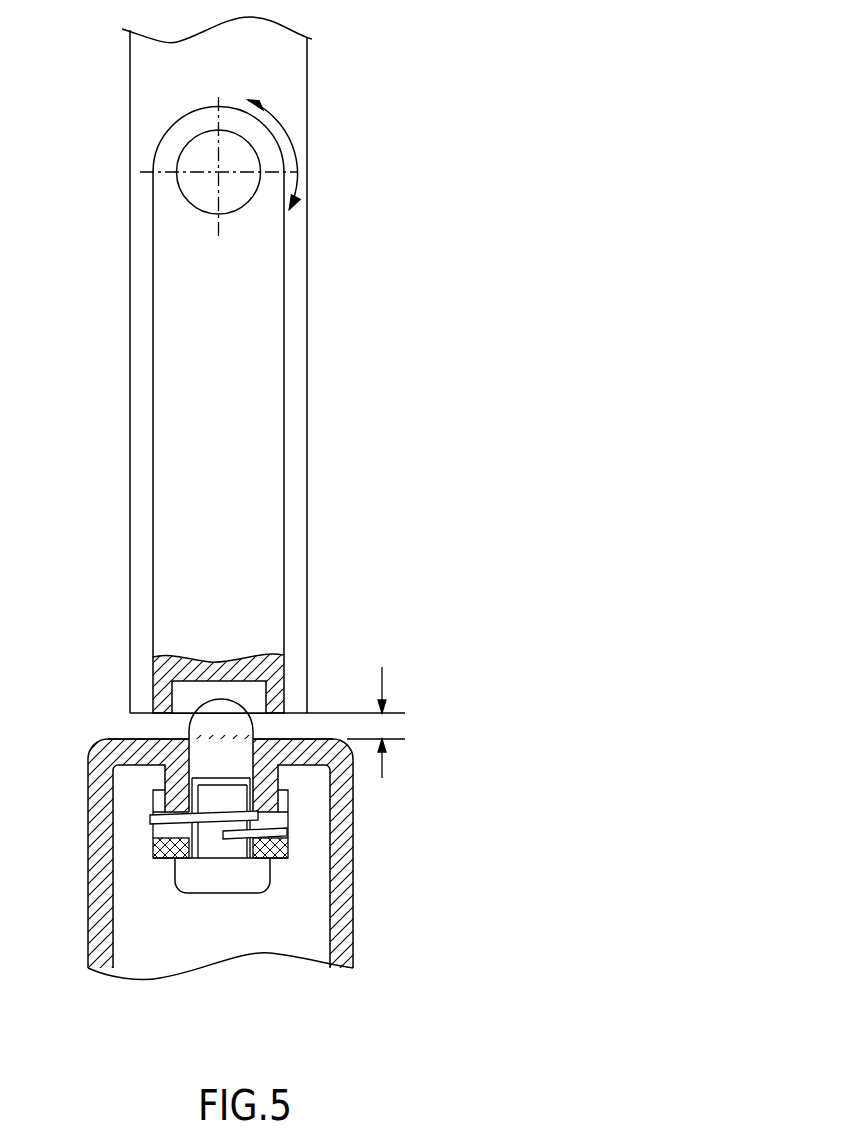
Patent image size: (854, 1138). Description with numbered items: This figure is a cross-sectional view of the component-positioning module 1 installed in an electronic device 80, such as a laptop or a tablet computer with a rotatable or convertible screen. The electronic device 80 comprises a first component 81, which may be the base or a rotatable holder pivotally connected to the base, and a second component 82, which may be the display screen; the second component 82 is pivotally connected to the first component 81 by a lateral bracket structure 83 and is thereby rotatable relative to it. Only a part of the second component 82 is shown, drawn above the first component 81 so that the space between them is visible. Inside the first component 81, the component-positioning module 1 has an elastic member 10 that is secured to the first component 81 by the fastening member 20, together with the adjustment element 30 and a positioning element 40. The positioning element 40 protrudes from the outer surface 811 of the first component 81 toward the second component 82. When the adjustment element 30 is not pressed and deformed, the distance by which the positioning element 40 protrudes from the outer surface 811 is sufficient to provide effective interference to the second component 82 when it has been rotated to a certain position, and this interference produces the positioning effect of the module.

The electronic device 80 is at (537, 61).
The second component 82 is at (143, 582).
The lateral bracket structure 83 is at (268, 405).
The first component 81 is at (100, 790).
The outer surface 811 is at (186, 738).
The positioning element 40 is at (210, 730).
The elastic member 10 is at (157, 860).
The fastening member 20 is at (218, 883).
The adjustment element 30 is at (287, 833).
The component-positioning module 1 is at (267, 931).